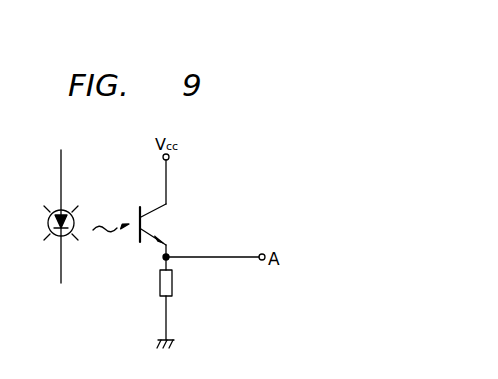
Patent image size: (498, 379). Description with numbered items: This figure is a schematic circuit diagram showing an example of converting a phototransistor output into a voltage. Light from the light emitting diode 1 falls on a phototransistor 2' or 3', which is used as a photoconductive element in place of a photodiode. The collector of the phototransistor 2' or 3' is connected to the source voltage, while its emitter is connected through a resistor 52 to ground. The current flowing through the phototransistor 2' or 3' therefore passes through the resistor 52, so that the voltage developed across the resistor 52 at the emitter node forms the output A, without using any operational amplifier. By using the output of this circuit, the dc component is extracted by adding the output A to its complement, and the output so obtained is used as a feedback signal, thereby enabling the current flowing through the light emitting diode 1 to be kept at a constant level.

The light emitting diode 1 is at (68, 207).
The phototransistor 2' is at (193, 215).
The phototransistor 3' is at (193, 215).
The resistor 52 is at (173, 283).